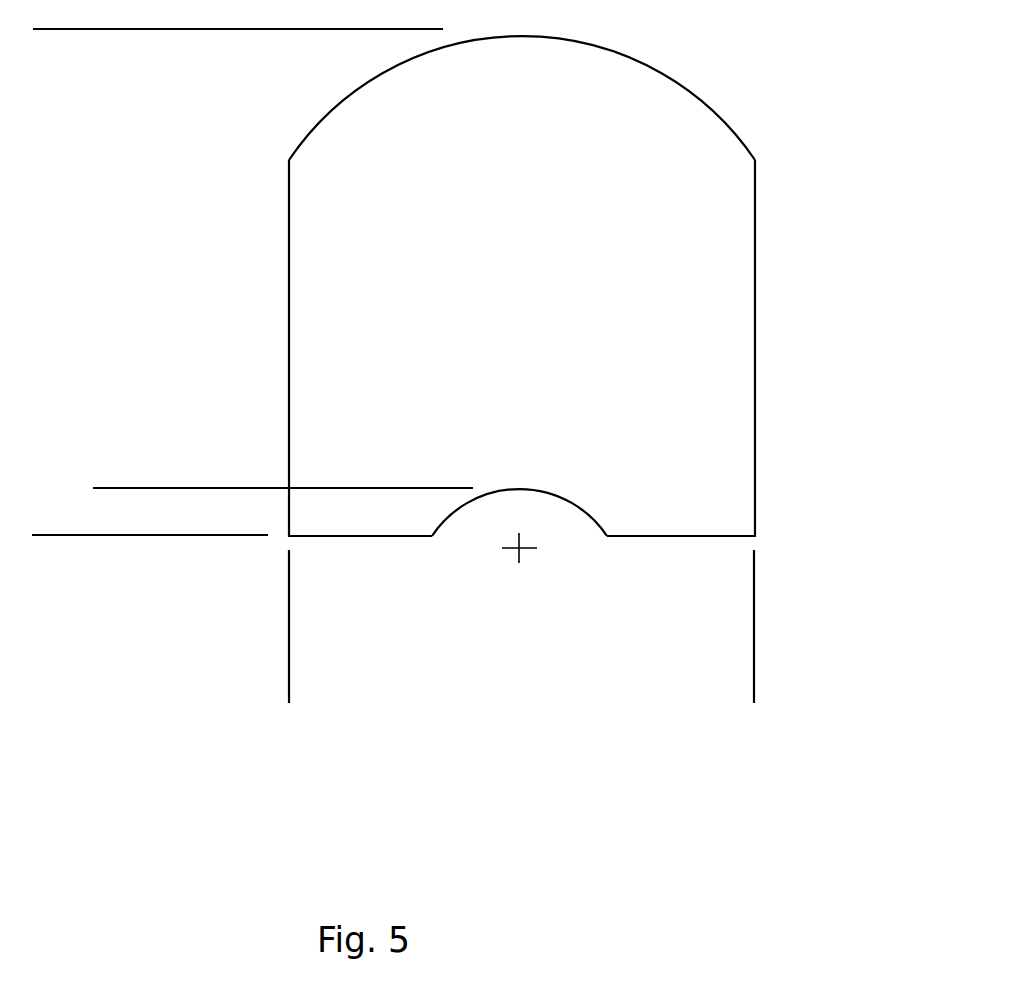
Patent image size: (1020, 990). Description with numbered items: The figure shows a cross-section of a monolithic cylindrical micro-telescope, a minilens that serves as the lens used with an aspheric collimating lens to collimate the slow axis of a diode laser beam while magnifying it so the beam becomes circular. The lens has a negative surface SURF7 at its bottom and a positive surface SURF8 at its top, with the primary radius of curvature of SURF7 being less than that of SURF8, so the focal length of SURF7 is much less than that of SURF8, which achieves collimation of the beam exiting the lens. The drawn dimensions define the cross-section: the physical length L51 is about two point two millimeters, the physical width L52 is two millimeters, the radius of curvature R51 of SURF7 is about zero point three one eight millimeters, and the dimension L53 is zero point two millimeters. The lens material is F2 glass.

The physical length L51 is at (55, 29).
The physical width of the lens L52 is at (753, 642).
The dimension L53 is at (130, 413).
The radius of curvature of SURF7 R51 is at (562, 495).
The negative surface SURF7 is at (523, 489).
The positive surface SURF8 is at (577, 42).